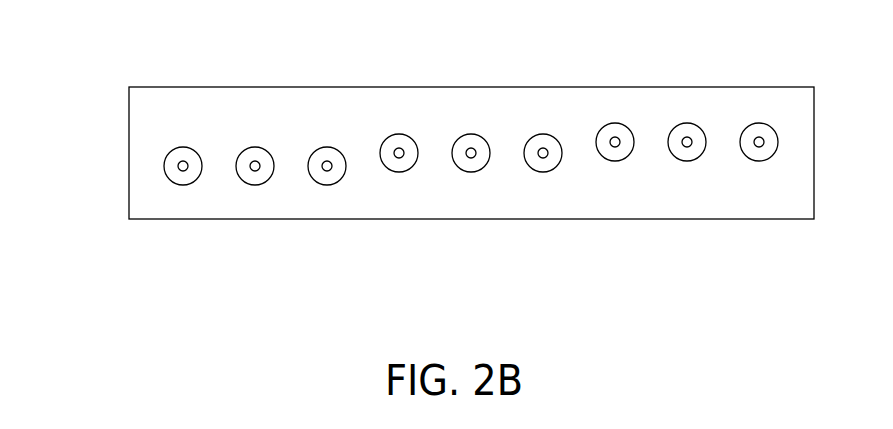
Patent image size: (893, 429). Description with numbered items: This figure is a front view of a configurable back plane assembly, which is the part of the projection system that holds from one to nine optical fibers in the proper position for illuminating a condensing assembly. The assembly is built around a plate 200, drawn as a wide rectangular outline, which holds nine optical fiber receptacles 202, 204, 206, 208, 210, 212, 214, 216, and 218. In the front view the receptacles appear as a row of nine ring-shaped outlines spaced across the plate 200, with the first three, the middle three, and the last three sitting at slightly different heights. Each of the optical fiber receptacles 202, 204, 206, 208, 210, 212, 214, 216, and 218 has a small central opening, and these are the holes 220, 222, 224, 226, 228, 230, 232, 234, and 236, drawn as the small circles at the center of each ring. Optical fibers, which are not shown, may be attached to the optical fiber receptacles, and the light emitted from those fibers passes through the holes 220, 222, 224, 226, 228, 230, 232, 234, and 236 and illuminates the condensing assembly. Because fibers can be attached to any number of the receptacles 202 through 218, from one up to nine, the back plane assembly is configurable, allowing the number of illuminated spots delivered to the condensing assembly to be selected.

The plate 200 is at (129, 153).
The optical fiber receptacle 202 is at (183, 147).
The optical fiber receptacle 204 is at (255, 147).
The optical fiber receptacle 206 is at (327, 147).
The optical fiber receptacle 208 is at (399, 134).
The optical fiber receptacle 210 is at (471, 134).
The optical fiber receptacle 212 is at (543, 134).
The optical fiber receptacle 214 is at (615, 123).
The optical fiber receptacle 216 is at (687, 123).
The optical fiber receptacle 218 is at (759, 123).
The hole 220 is at (183, 185).
The hole 222 is at (255, 185).
The hole 224 is at (327, 185).
The hole 226 is at (399, 172).
The hole 228 is at (471, 172).
The hole 230 is at (543, 172).
The hole 232 is at (615, 161).
The hole 234 is at (687, 161).
The hole 236 is at (759, 161).